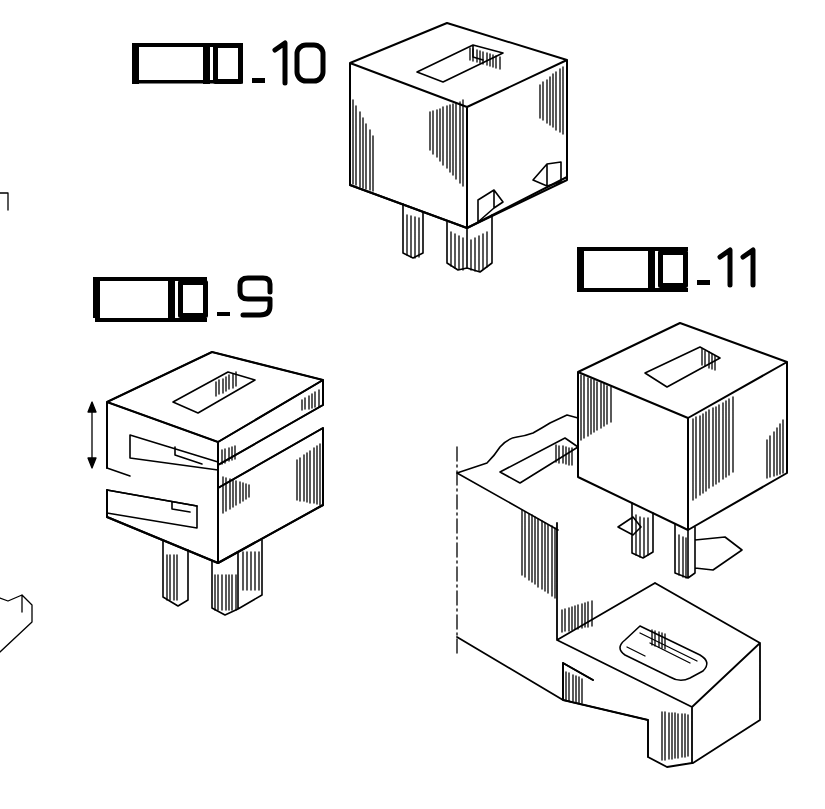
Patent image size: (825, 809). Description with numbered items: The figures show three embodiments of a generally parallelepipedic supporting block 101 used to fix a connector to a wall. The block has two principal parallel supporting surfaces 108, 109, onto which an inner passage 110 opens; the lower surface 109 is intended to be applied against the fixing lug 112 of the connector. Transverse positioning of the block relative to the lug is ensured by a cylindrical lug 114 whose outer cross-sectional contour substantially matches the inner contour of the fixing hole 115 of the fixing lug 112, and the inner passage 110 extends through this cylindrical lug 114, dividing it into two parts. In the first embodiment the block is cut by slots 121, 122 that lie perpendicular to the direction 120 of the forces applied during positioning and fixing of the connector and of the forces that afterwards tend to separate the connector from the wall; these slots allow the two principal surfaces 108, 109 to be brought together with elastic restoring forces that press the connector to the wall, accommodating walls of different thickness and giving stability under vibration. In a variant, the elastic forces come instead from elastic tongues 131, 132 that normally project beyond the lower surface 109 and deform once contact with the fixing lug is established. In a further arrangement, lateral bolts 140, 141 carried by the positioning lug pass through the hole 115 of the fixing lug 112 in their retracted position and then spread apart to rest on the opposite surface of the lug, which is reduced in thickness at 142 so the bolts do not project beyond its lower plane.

In FIG. 10, the supporting block 101 is at (363, 97).
In FIG. 9, the supporting block 101 is at (287, 468).
In FIG. 11, the supporting block 101 is at (617, 413).
In FIG. 9, the principal supporting surface 108 is at (168, 385).
In FIG. 10, the principal supporting surface 109 is at (387, 197).
In FIG. 9, the principal supporting surface 109 is at (288, 523).
In FIG. 10, the inner passage 110 is at (477, 47).
In FIG. 9, the inner passage 110 is at (243, 380).
In FIG. 11, the inner passage 110 is at (713, 360).
In FIG. 11, the fixing lug 112 is at (733, 720).
In FIG. 9, the cylindrical lug 114 is at (245, 578).
In FIG. 11, the fixing hole 115 is at (680, 653).
In FIG. 9, the direction 120 is at (84, 430).
In FIG. 9, the slot 121 is at (307, 423).
In FIG. 9, the slot 122 is at (118, 493).
In FIG. 10, the elastic tongue 131 is at (503, 193).
In FIG. 10, the elastic tongue 132 is at (547, 173).
In FIG. 11, the lateral bolt 140 is at (627, 523).
In FIG. 11, the lateral bolt 141 is at (727, 545).
In FIG. 11, the reduced-thickness region 142 is at (625, 693).